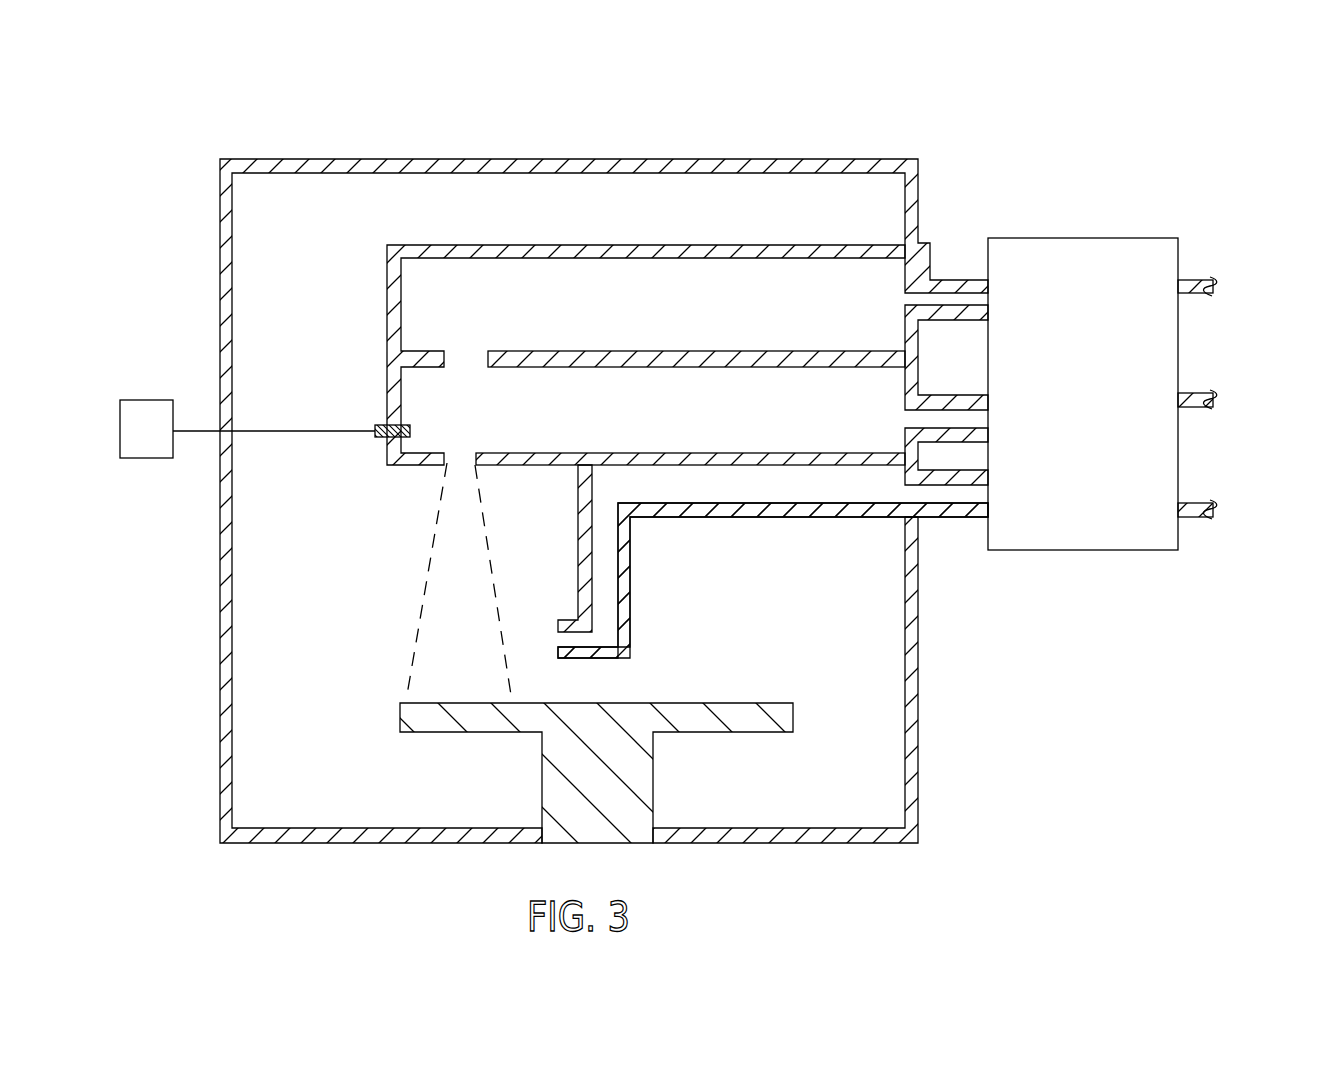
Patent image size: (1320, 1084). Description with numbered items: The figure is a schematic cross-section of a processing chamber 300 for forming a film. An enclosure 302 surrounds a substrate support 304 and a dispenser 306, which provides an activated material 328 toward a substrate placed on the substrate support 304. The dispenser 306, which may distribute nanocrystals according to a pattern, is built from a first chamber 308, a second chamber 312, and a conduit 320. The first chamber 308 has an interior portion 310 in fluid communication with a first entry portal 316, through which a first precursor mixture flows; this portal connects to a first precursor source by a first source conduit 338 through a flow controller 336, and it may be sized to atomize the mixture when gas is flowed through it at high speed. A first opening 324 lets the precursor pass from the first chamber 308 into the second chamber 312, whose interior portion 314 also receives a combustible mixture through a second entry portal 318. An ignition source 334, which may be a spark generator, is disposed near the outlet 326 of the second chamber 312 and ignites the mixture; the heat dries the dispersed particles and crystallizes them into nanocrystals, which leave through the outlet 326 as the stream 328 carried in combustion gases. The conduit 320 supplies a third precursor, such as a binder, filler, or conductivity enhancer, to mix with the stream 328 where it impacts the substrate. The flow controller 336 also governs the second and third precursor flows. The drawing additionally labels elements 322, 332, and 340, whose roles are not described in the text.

The processing chamber 300 is at (272, 100).
The enclosure 302 is at (835, 158).
The substrate support 304 is at (455, 733).
The dispenser 306 is at (415, 216).
The first chamber 308 is at (710, 245).
The interior portion 310 is at (708, 302).
The second chamber 312 is at (758, 453).
The interior portion 314 is at (675, 418).
The first entry portal 316 is at (980, 300).
The second entry portal 318 is at (980, 420).
The conduit 320 is at (660, 505).
The gas nozzle 322 is at (605, 618).
The first opening 324 is at (463, 358).
The outlet 326 is at (457, 460).
The activated material 328 is at (430, 550).
The gas stream 332 is at (460, 643).
The ignition source 334 is at (138, 400).
The flow controller 336 is at (1130, 237).
The first source conduit 338 is at (1200, 278).
The second gas source 340 is at (1200, 393).